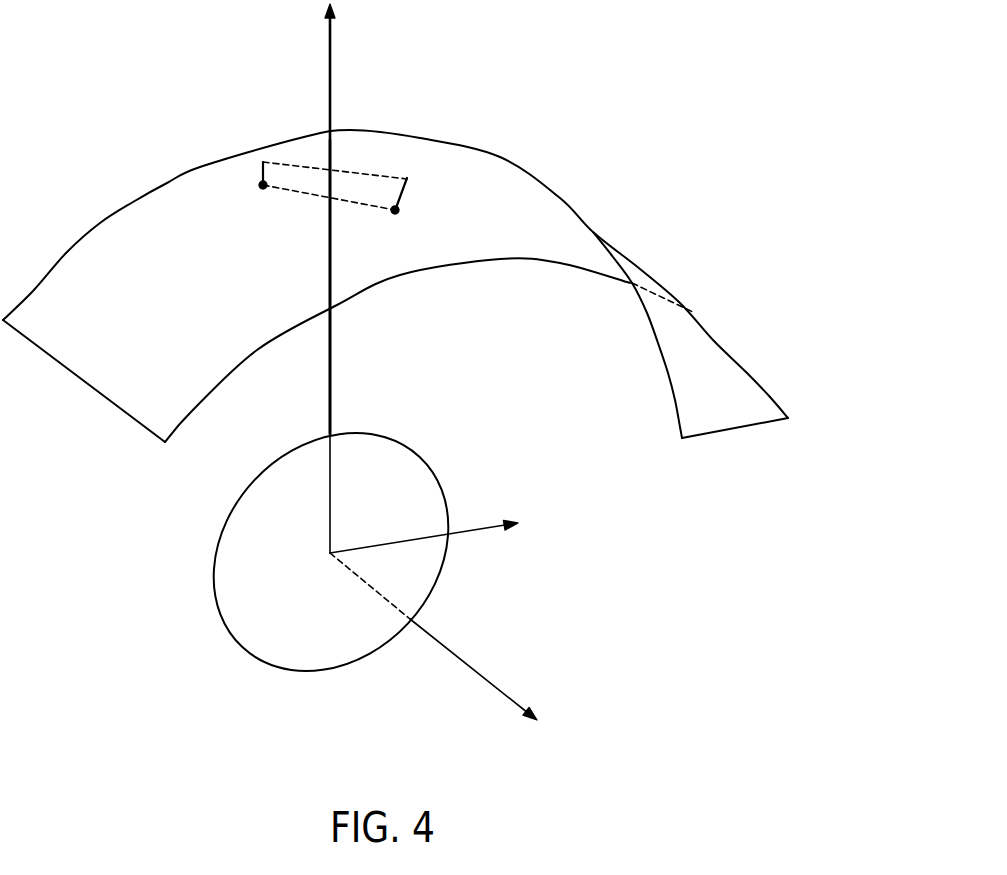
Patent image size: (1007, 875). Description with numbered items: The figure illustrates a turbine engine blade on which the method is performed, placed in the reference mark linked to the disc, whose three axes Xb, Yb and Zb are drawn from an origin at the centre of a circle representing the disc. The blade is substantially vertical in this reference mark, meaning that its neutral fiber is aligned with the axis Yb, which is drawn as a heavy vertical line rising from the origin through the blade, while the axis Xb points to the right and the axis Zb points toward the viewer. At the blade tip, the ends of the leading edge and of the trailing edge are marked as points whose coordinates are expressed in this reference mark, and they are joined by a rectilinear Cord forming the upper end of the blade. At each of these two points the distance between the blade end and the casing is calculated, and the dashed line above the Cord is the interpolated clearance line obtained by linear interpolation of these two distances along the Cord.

The rectilinear cord Cord is at (358, 205).
The axis Xb of the disc reference mark Xb is at (428, 541).
The axis Yb of the disc reference mark Yb is at (352, 278).
The axis Zb of the disc reference mark Zb is at (448, 636).